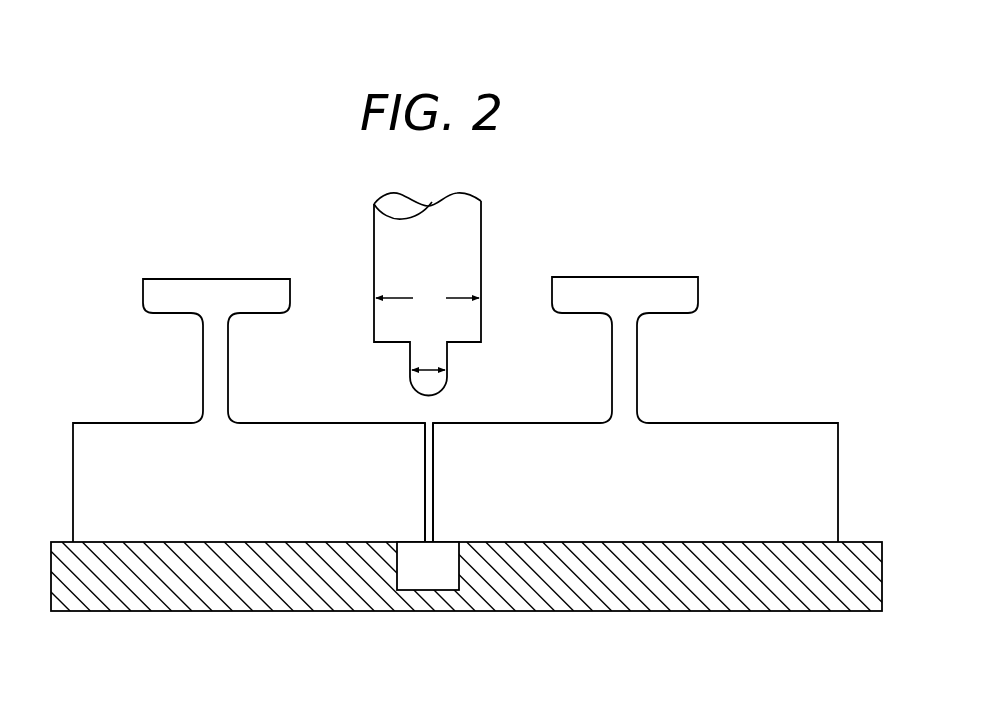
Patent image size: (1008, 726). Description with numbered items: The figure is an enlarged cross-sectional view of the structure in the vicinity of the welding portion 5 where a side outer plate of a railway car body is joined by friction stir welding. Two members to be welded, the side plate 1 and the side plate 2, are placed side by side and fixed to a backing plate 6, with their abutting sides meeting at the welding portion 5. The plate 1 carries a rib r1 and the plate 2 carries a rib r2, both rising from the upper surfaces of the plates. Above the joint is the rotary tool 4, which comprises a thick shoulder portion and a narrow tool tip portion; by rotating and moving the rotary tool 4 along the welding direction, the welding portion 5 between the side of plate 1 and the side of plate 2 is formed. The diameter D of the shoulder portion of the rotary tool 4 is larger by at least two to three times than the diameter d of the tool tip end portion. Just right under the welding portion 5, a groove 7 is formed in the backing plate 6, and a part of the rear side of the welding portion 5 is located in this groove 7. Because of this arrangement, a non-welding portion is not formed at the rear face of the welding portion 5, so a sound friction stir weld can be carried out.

The side plate 1 is at (166, 447).
The side plate 2 is at (748, 440).
The rotary tool 4 is at (472, 237).
The welding portion 5 is at (433, 490).
The backing plate 6 is at (703, 577).
The groove 7 is at (430, 573).
The rib r1 is at (202, 290).
The rib r2 is at (620, 287).
The diameter of the shoulder portion D is at (427, 298).
The diameter of the tool tip end portion d is at (428, 352).